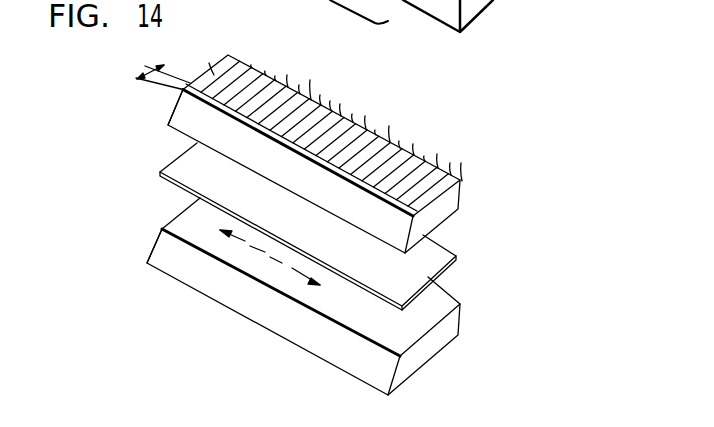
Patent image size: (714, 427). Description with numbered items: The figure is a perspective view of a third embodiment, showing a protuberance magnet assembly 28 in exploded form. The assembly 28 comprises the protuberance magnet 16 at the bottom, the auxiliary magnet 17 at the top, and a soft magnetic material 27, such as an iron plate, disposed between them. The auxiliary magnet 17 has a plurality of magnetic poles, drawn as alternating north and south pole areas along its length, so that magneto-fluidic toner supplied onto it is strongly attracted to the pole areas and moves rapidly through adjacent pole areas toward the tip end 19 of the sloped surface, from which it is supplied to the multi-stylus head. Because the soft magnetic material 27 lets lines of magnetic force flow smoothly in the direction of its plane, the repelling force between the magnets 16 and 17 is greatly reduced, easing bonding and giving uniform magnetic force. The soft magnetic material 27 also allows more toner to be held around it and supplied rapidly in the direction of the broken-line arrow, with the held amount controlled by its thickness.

The protuberance magnet 16 is at (444, 311).
The auxiliary magnet 17 is at (436, 196).
The tip end of the sloped surface 19 is at (170, 124).
The soft magnetic material 27 is at (447, 249).
The protuberance magnet assembly 28 is at (503, 122).